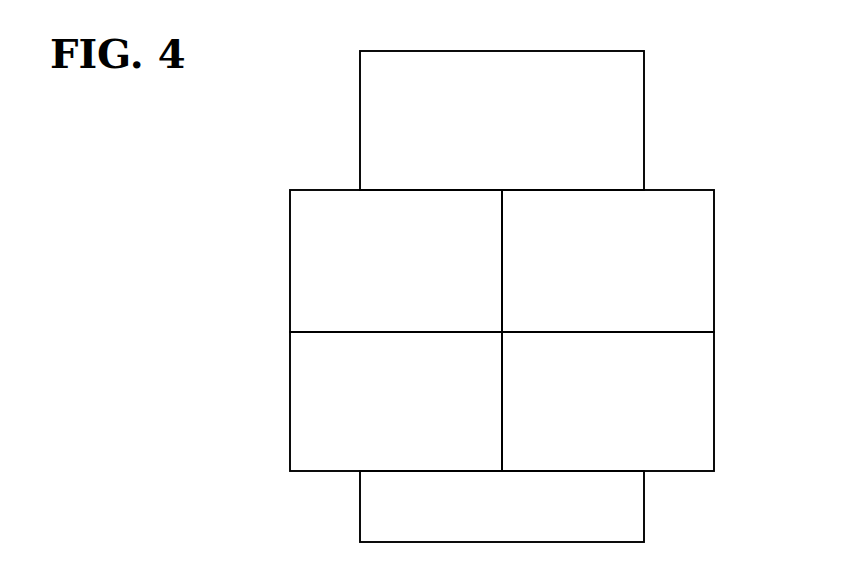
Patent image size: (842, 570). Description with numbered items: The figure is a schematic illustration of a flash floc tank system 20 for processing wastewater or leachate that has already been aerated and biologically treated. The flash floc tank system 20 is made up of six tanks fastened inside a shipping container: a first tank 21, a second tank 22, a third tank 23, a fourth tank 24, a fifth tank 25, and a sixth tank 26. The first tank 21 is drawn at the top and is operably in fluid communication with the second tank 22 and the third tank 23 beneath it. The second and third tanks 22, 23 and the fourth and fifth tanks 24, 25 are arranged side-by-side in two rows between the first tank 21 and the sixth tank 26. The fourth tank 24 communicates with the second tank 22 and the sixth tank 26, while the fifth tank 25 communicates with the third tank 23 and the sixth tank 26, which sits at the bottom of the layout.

The flash floc tank system 20 is at (320, 148).
The first tank 21 is at (644, 127).
The second tank 22 is at (290, 265).
The third tank 23 is at (714, 253).
The fourth tank 24 is at (290, 402).
The fifth tank 25 is at (714, 389).
The sixth tank 26 is at (644, 502).